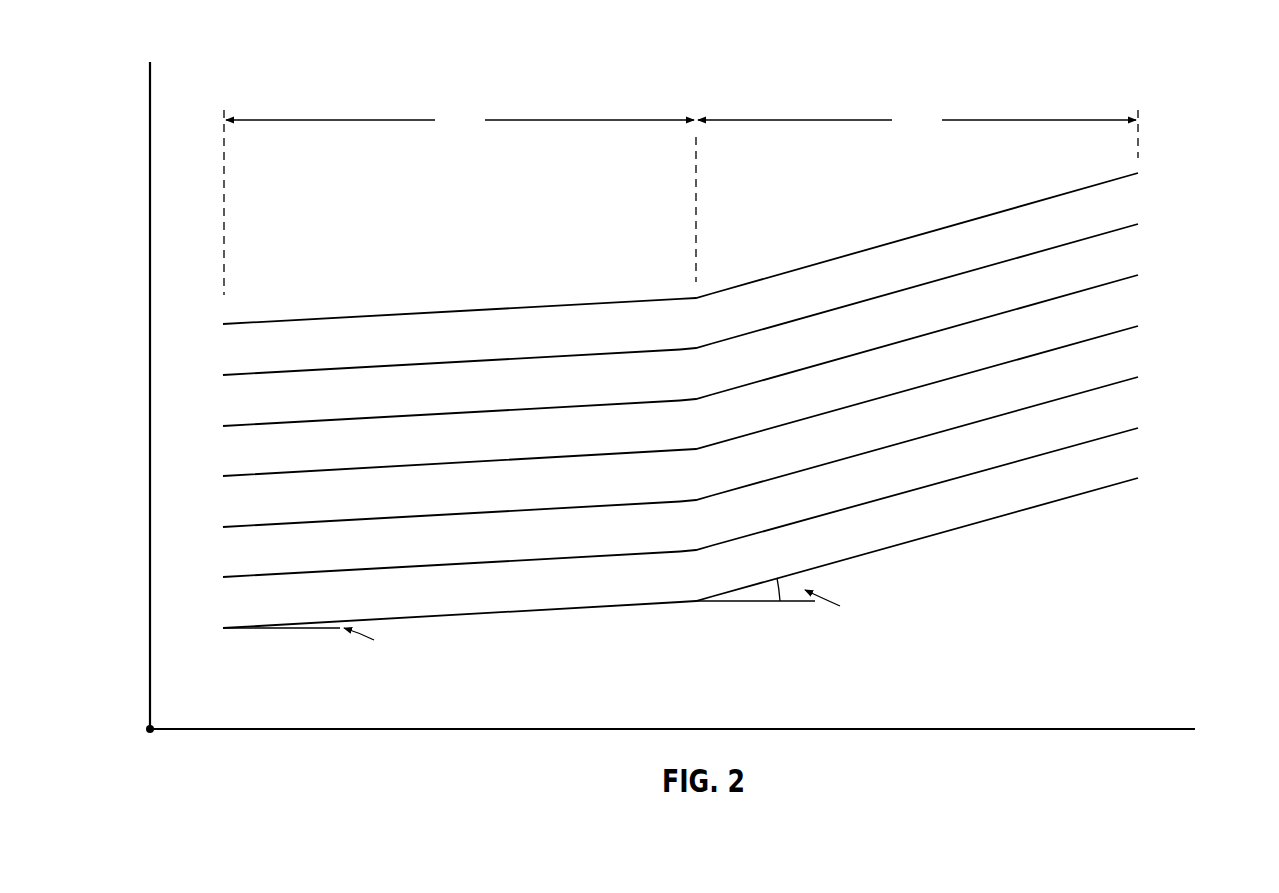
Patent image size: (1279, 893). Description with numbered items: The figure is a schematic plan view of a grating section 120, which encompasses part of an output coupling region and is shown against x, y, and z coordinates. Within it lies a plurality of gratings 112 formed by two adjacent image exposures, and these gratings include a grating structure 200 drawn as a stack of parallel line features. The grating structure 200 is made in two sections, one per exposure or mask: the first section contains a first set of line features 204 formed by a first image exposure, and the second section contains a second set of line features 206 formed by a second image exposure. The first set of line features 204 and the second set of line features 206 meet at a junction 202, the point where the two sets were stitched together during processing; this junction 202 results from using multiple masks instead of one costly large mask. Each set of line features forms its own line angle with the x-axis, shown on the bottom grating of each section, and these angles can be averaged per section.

The grating section 120 is at (1197, 90).
The grating structure 200 is at (1090, 541).
The plurality of gratings 112 is at (1113, 333).
The first set of line features 204 is at (306, 273).
The second set of line features 206 is at (792, 240).
The junction 202 is at (690, 620).